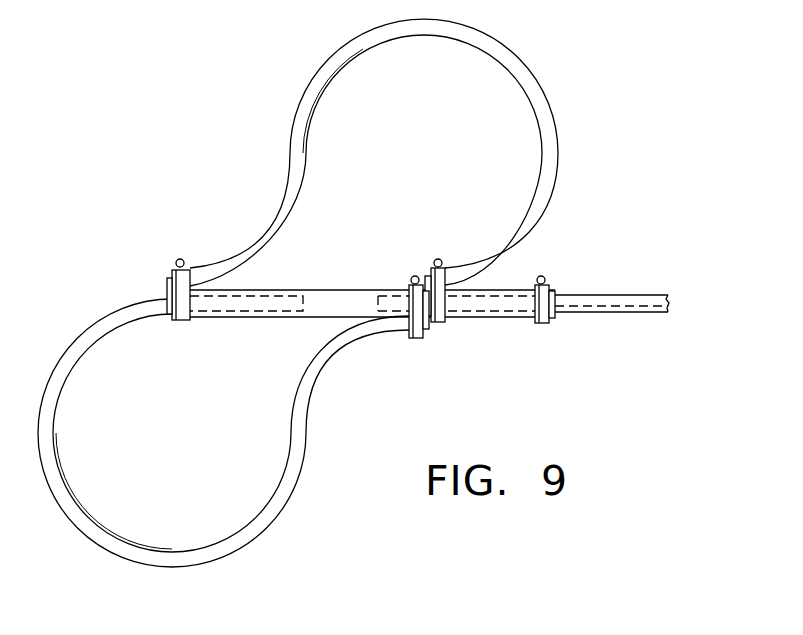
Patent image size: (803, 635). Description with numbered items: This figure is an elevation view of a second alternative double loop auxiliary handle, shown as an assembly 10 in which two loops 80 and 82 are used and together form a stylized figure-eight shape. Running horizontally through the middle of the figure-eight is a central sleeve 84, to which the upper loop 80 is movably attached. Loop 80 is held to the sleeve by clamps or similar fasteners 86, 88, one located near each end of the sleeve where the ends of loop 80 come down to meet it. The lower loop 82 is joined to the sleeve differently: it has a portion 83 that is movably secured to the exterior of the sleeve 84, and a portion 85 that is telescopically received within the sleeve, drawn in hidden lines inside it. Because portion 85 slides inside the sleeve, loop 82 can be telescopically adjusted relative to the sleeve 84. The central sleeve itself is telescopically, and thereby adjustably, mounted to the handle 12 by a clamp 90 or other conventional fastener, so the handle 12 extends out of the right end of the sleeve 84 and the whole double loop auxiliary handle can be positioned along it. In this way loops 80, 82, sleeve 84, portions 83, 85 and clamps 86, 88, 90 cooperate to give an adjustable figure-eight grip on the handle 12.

The catheter heating/cooling assembly 10 is at (358, 293).
The handle 12 is at (597, 313).
The loop 80 is at (436, 134).
The loop 82 is at (179, 404).
The portion 83 is at (405, 336).
The central sleeve 84 is at (350, 288).
The portion 85 is at (250, 300).
The clamp 86 is at (443, 262).
The clamp 88 is at (176, 264).
The clamp 90 is at (545, 279).